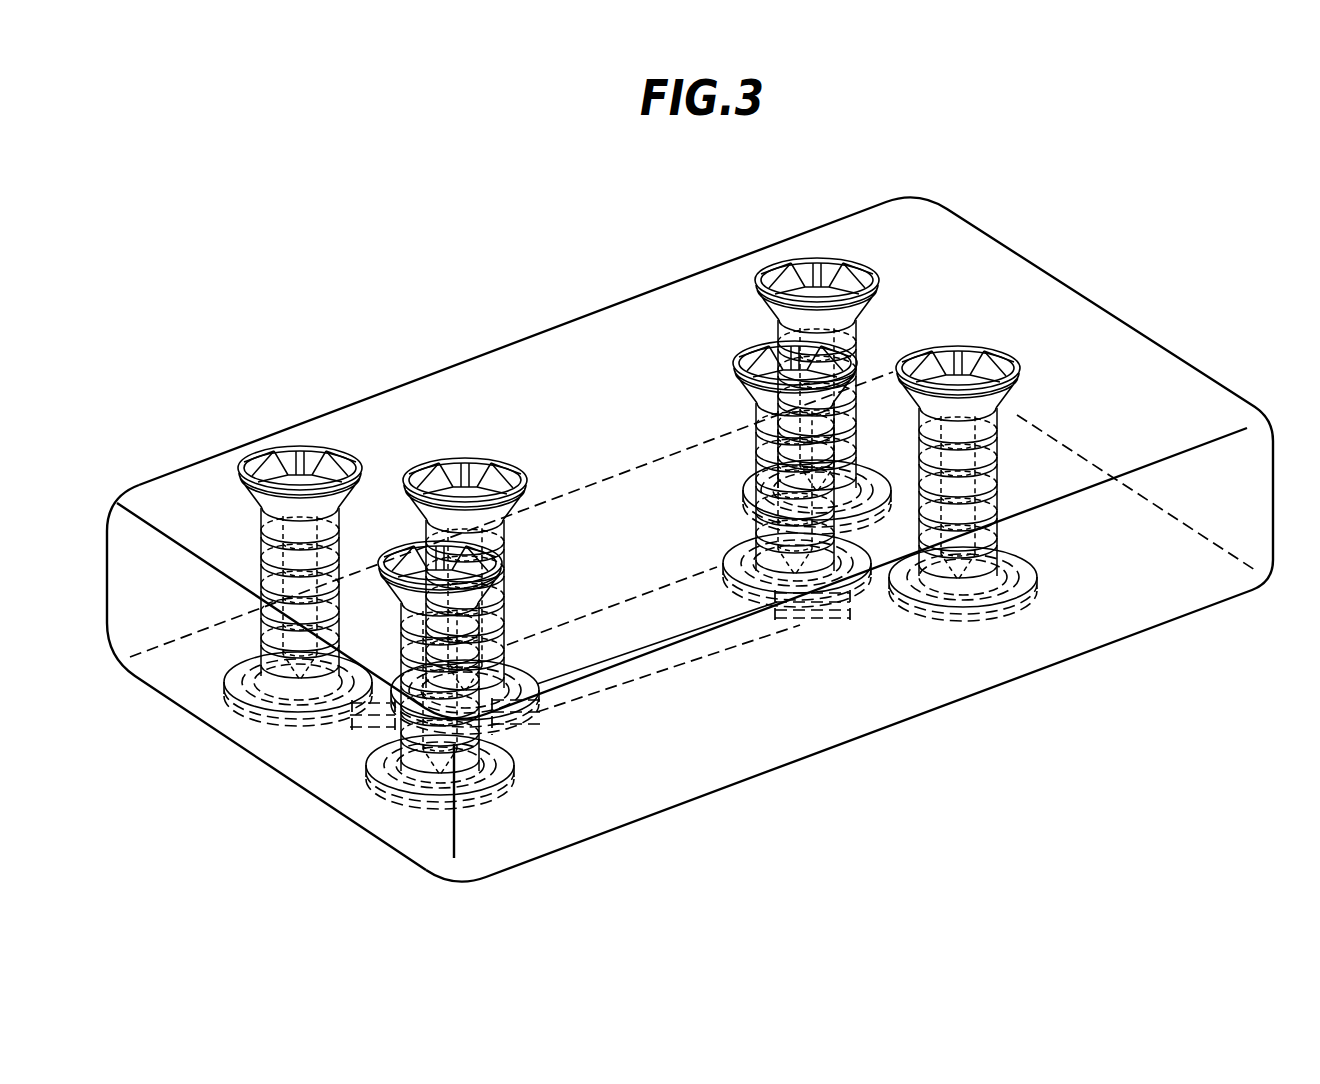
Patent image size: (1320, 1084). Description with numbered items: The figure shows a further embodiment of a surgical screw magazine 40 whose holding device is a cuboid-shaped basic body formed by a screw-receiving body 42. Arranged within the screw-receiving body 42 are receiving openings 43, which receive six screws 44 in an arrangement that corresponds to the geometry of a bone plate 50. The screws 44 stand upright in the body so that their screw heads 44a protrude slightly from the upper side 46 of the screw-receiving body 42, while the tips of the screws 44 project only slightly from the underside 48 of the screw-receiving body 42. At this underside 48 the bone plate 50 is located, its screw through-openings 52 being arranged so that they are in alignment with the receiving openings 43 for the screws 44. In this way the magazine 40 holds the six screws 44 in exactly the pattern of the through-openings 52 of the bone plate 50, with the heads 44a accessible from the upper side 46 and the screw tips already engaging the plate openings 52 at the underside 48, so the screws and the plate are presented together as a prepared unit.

The surgical screw magazine 40 is at (690, 535).
The screw-receiving body 42 is at (157, 462).
The receiving openings 43 is at (262, 526).
The screws 44 is at (592, 456).
The screw heads 44a is at (313, 466).
The upper side 46 is at (586, 280).
The underside 48 is at (1096, 672).
The bone plate 50 is at (603, 686).
The screw through-openings 52 is at (288, 708).